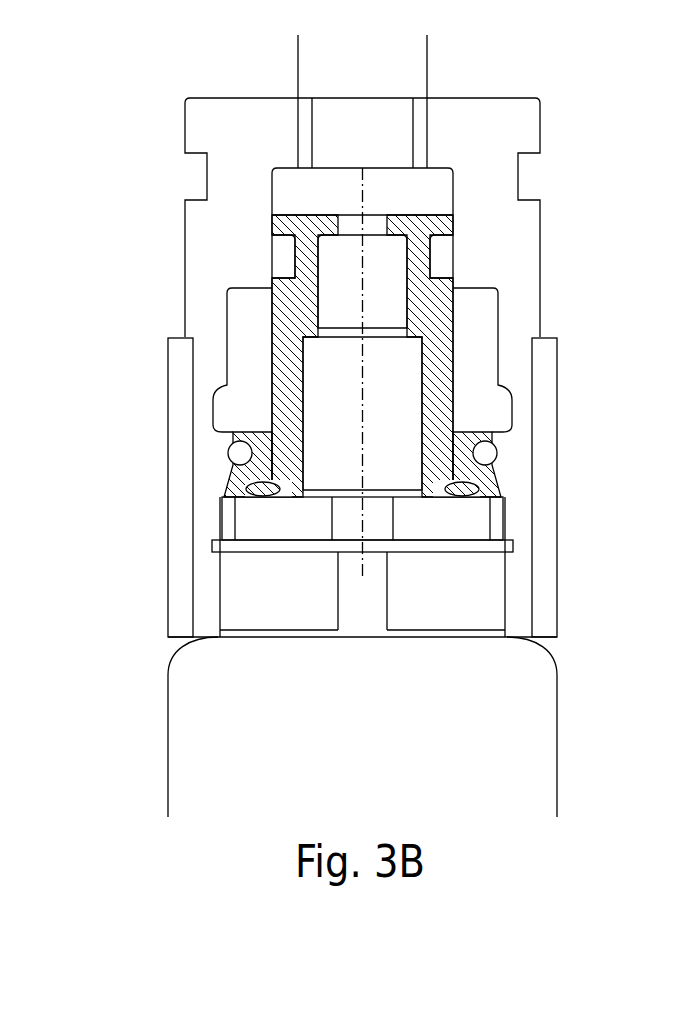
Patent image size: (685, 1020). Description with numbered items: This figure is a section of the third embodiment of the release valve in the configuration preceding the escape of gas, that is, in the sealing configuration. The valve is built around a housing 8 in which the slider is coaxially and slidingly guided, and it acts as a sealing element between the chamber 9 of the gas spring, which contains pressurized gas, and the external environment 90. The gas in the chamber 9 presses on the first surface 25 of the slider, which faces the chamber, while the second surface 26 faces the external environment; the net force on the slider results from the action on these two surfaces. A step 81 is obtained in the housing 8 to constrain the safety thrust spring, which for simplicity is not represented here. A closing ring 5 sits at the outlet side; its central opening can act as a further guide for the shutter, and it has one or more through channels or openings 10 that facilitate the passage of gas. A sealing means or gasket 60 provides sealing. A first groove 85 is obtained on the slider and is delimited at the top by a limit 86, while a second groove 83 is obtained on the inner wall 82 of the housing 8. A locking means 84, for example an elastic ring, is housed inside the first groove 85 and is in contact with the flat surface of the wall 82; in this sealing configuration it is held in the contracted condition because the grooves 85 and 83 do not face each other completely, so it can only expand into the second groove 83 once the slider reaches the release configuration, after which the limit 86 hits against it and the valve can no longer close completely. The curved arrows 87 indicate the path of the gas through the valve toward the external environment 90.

The closing ring 5 is at (285, 525).
The housing 8 is at (523, 443).
The chamber 9 is at (370, 73).
The through channels or openings 10 is at (227, 524).
The first surface 25 is at (300, 196).
The second surface 26 is at (442, 516).
The sealing means or gasket 60 is at (470, 497).
The step 81 is at (378, 456).
The inner wall 82 is at (502, 302).
The second groove or spline 83 is at (505, 410).
The locking means 84 is at (237, 455).
The first groove or spline 85 is at (463, 455).
The limit 86 is at (460, 418).
The flow path 87 is at (222, 592).
The external environment 90 is at (287, 696).